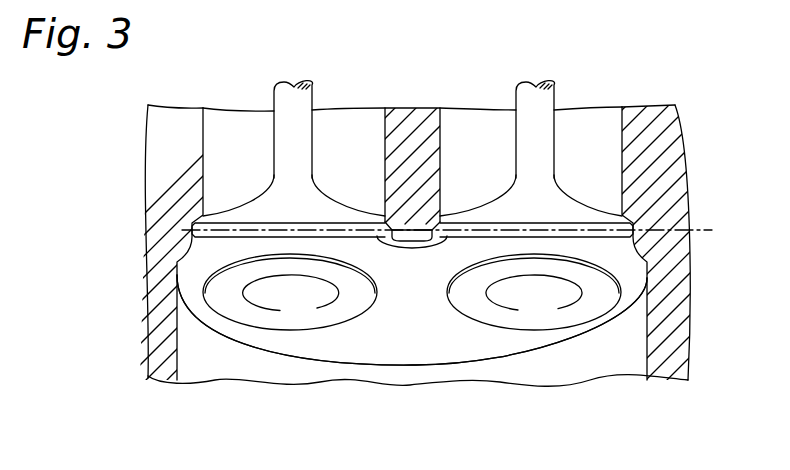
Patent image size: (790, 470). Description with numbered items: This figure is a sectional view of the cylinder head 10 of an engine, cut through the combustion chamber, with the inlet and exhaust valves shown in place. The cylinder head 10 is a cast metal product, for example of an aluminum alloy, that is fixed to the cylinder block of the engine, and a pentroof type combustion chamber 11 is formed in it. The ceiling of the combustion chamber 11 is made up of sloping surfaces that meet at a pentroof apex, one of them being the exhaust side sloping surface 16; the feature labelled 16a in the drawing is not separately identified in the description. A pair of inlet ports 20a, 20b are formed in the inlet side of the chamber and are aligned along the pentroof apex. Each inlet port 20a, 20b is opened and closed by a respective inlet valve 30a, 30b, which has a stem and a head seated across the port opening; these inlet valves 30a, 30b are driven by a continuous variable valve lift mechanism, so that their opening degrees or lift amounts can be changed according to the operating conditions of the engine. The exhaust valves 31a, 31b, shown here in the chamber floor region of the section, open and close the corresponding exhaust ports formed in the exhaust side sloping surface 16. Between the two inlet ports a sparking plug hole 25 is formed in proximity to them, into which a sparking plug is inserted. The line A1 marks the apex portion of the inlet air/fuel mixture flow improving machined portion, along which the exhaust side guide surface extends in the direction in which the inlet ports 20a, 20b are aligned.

The cylinder head 10 is at (643, 113).
The pentroof type combustion chamber 11 is at (410, 381).
The exhaust side sloping surface 16 is at (412, 320).
The combustion chamber ceiling surface 16a is at (440, 346).
The inlet port 20a is at (472, 188).
The inlet port 20b is at (350, 188).
The sparking plug hole 25 is at (412, 248).
The inlet valve 30a is at (565, 190).
The inlet valve 30b is at (260, 190).
The exhaust valve 31a is at (578, 317).
The exhaust valve 31b is at (275, 318).
The apex portion of the inlet air/fuel mixture flow improving machined portion A1 is at (462, 231).